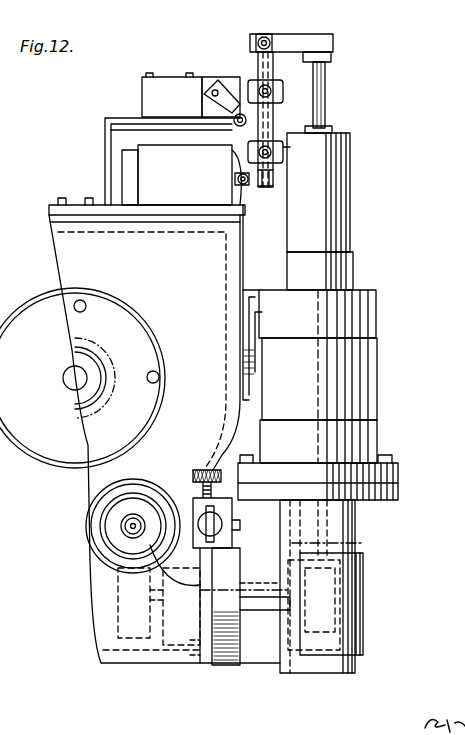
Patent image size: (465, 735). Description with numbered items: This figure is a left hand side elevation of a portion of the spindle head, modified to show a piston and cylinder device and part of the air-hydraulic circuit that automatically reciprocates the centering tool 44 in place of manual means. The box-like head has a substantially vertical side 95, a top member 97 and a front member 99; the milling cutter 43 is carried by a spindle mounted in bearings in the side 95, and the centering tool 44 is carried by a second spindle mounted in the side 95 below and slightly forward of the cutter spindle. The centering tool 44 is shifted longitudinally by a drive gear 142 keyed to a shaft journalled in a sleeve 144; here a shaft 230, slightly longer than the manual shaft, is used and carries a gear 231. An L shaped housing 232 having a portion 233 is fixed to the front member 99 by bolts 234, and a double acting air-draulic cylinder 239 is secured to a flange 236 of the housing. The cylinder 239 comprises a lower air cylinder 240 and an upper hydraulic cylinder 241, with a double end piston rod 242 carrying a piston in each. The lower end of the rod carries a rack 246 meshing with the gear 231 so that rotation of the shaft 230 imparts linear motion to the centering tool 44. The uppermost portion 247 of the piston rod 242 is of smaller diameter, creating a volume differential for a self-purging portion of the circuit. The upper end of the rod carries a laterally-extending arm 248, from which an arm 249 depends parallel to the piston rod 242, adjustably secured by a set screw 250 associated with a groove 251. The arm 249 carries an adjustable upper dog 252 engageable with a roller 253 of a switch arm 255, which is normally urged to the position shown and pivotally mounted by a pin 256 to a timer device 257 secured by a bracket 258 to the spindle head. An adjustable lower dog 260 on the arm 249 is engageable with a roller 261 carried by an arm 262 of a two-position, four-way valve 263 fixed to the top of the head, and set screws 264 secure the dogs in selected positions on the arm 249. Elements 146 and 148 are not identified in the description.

The milling cutter 43 is at (110, 418).
The centering tool 44 is at (128, 525).
The side 95 is at (176, 286).
The top member 97 is at (60, 205).
The front member 99 is at (242, 256).
The drive gear 142 is at (128, 614).
The sleeve 144 is at (192, 662).
The clamp block 146 is at (215, 522).
The knurled knob 148 is at (204, 470).
The shaft 230 is at (178, 615).
The gear 231 is at (366, 598).
The L shaped housing 232 is at (336, 685).
The portion 233 is at (266, 640).
The bolts 234 is at (245, 560).
The flange 236 is at (398, 490).
The double acting air-draulic cylinder 239 is at (377, 288).
The lower air cylinder 240 is at (370, 374).
The upper hydraulic cylinder 241 is at (332, 208).
The double end piston rod 242 is at (322, 118).
The rack 246 is at (362, 546).
The uppermost portion 247 is at (326, 90).
The laterally-extending arm 248 is at (300, 42).
The arm 249 is at (258, 66).
The set screw 250 is at (266, 36).
The groove 251 is at (258, 44).
The adjustable upper dog 252 is at (270, 90).
The roller 253 is at (213, 146).
The switch arm 255 is at (206, 128).
The pin 256 is at (204, 99).
The timer device 257 is at (142, 95).
The bracket 258 is at (106, 124).
The adjustable lower dog 260 is at (272, 148).
The roller 261 is at (252, 188).
The arm 262 is at (243, 182).
The two-position, four-way valve 263 is at (185, 188).
The set screws 264 is at (272, 97).